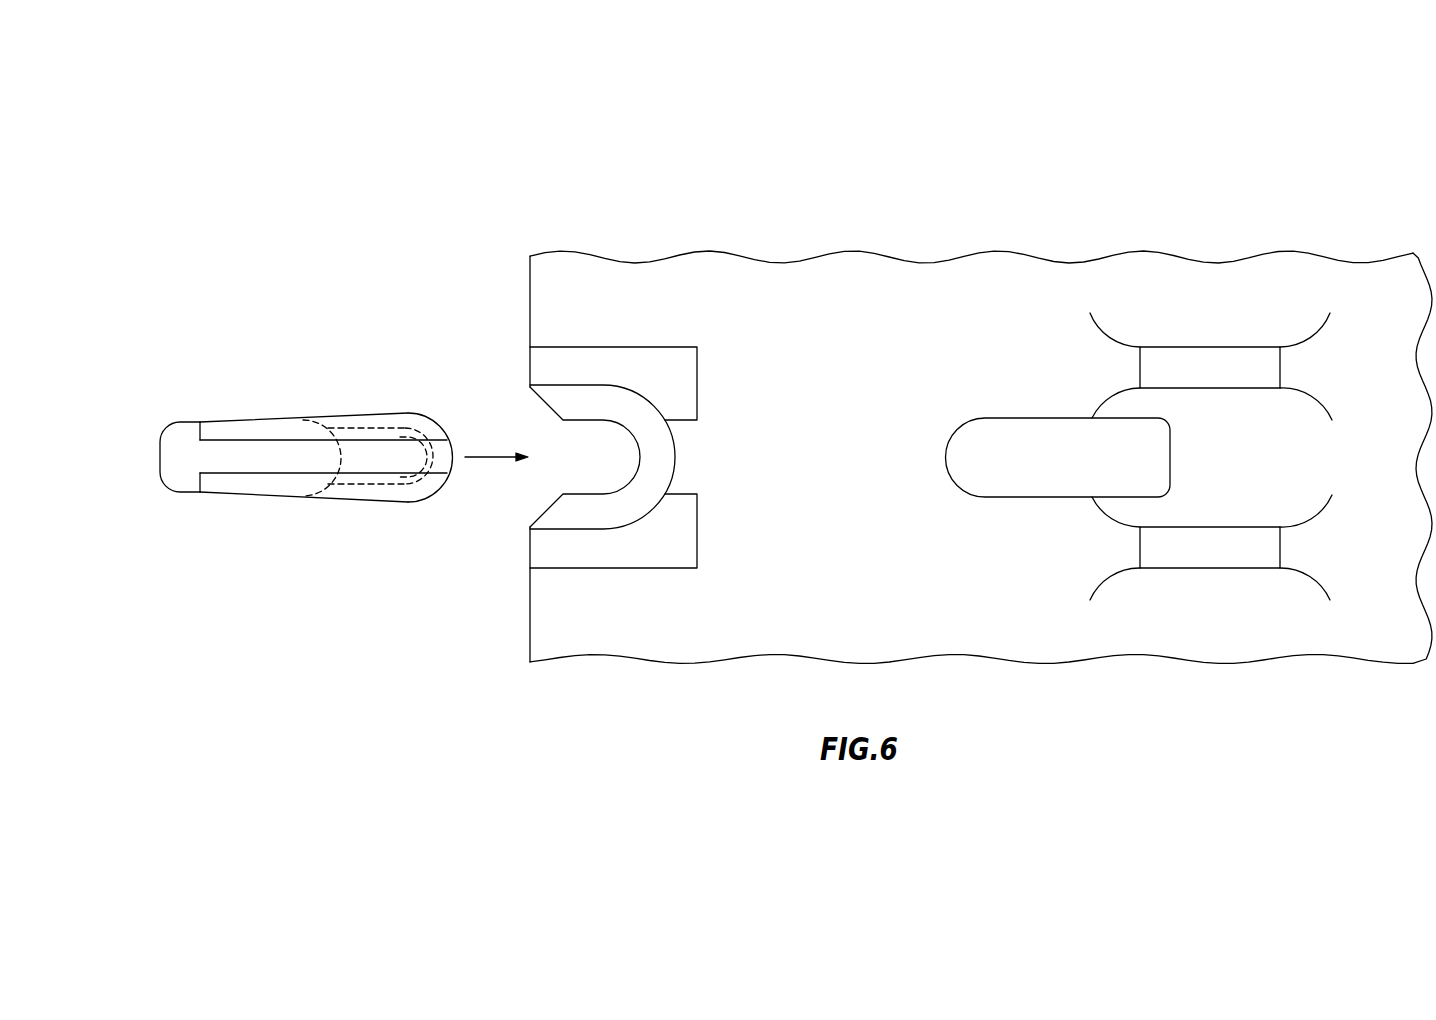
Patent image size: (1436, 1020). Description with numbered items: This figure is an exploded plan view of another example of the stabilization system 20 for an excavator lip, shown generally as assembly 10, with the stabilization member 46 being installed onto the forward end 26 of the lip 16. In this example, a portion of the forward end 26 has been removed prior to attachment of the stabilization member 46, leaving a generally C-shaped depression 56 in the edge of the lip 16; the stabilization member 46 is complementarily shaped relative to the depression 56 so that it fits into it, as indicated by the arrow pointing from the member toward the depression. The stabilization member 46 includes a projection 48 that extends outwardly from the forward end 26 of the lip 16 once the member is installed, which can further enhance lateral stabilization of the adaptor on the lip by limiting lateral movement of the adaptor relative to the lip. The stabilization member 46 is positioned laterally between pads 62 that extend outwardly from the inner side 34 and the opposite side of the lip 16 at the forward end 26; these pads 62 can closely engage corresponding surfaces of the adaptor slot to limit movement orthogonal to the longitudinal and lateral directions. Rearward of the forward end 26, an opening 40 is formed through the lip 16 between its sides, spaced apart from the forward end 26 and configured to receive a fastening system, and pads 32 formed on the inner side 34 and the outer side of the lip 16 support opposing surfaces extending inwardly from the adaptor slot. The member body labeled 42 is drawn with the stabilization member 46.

The fastening assembly 10 is at (273, 180).
The lip 16 is at (750, 666).
The stabilization system 20 is at (713, 429).
The forward end 26 is at (530, 578).
The pads 32 is at (1208, 360).
The inner side 34 is at (850, 272).
The opening 40 is at (1003, 487).
The pin 42 is at (372, 440).
The stabilization member 46 is at (194, 497).
The projection 48 is at (160, 456).
The depression 56 is at (640, 455).
The pads 62 is at (648, 357).